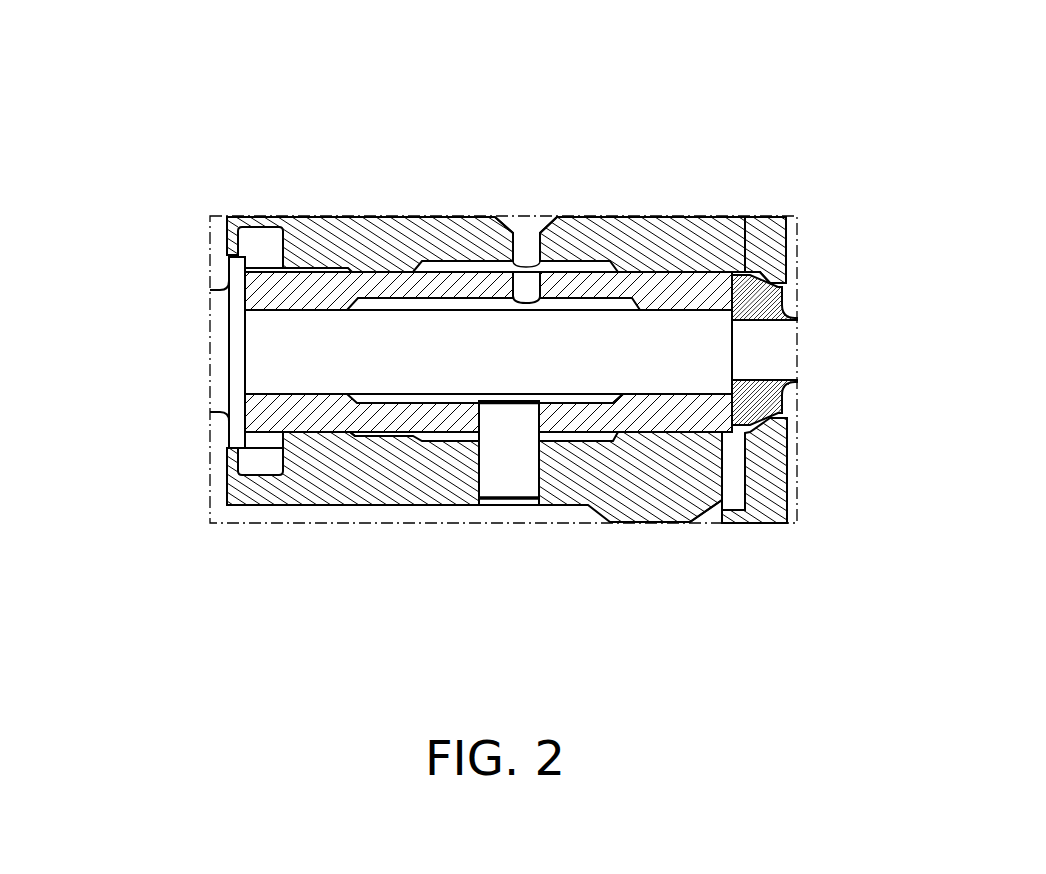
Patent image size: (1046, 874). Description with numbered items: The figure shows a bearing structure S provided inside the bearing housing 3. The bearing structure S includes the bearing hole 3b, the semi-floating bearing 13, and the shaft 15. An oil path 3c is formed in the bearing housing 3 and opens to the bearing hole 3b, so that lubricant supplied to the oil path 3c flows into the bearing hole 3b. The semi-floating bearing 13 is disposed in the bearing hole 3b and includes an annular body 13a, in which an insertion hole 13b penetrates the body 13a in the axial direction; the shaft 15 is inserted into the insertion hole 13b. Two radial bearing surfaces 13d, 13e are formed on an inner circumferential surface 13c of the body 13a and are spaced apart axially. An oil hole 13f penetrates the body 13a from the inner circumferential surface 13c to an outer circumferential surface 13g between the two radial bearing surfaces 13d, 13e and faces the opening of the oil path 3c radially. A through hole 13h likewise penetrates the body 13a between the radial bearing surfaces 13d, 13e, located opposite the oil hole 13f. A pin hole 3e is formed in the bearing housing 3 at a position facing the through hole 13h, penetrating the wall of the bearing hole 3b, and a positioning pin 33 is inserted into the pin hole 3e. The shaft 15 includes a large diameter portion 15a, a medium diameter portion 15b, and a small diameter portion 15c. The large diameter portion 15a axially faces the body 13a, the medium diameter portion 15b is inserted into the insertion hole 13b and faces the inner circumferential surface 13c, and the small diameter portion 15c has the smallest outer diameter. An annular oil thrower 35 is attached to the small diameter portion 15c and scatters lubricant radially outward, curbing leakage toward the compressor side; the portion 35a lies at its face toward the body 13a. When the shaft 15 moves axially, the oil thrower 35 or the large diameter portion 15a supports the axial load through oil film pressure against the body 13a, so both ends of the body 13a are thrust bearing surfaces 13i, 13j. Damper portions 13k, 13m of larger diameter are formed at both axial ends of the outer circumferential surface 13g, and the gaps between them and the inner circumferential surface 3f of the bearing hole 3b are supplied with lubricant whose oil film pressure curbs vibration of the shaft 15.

The bearing structure S is at (318, 70).
The bearing housing 3 is at (667, 222).
The bearing hole 3b is at (757, 435).
The oil path 3c is at (547, 216).
The pin hole 3e is at (488, 478).
The inner circumferential surface of the bearing hole 3f is at (703, 440).
The semi-floating bearing 13 is at (260, 266).
The body 13a is at (320, 266).
The insertion hole 13b is at (640, 386).
The inner circumferential surface 13c is at (688, 422).
The radial bearing surface 13d is at (300, 384).
The radial bearing surface 13e is at (733, 340).
The oil hole 13f is at (540, 271).
The outer circumferential surface 13g is at (466, 262).
The through hole 13h is at (588, 386).
The thrust bearing surface 13i is at (243, 292).
The thrust bearing surface 13j is at (783, 287).
The damper portion 13k is at (345, 437).
The damper portion 13m is at (778, 270).
The shaft 15 is at (471, 363).
The large diameter portion 15a is at (238, 357).
The medium diameter portion 15b is at (283, 385).
The small diameter portion 15c is at (760, 357).
The positioning pin 33 is at (513, 478).
The oil thrower 35 is at (797, 390).
The upper face of seal member 35a is at (724, 380).